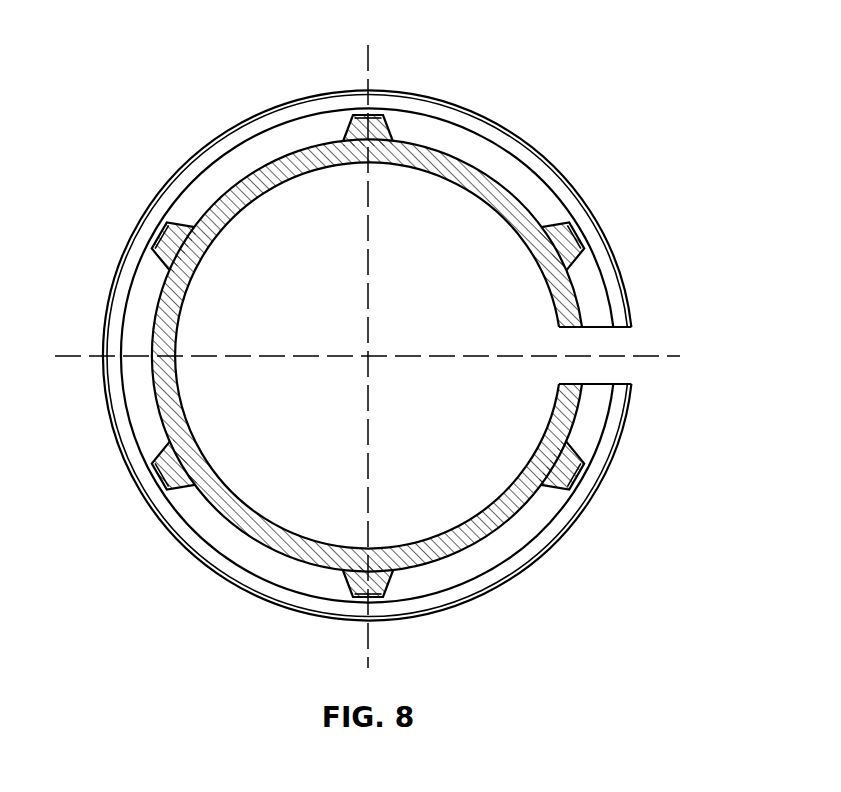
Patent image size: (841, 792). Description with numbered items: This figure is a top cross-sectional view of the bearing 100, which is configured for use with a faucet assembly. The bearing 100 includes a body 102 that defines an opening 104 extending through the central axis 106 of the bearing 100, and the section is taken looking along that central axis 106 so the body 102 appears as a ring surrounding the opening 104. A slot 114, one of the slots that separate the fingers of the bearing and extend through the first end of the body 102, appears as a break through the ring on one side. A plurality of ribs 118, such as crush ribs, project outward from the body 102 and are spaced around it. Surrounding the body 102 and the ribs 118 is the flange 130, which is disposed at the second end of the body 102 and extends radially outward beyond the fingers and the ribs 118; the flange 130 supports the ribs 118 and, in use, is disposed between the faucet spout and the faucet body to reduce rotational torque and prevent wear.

The bearing 100 is at (160, 36).
The body 102 is at (606, 180).
The opening 104 is at (192, 391).
The central axis 106 is at (368, 357).
The slots 114 is at (627, 347).
The ribs 118 is at (160, 237).
The flange 130 is at (518, 137).